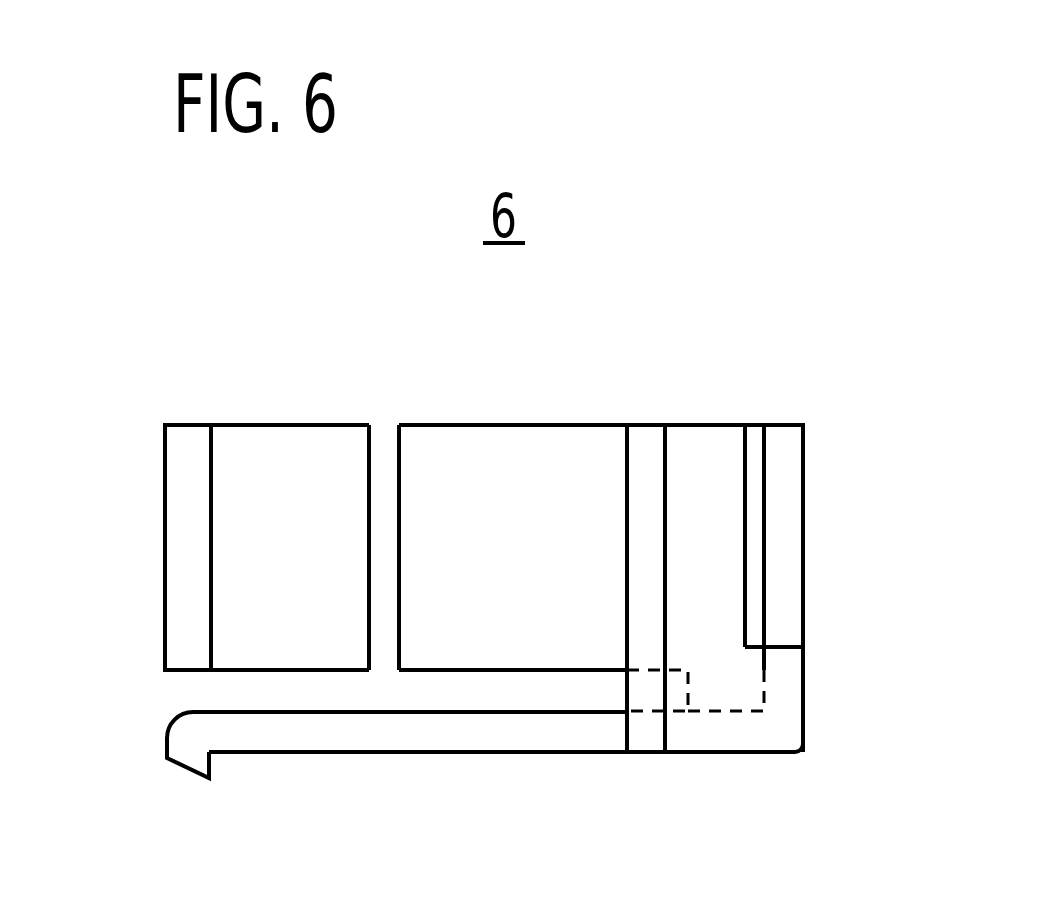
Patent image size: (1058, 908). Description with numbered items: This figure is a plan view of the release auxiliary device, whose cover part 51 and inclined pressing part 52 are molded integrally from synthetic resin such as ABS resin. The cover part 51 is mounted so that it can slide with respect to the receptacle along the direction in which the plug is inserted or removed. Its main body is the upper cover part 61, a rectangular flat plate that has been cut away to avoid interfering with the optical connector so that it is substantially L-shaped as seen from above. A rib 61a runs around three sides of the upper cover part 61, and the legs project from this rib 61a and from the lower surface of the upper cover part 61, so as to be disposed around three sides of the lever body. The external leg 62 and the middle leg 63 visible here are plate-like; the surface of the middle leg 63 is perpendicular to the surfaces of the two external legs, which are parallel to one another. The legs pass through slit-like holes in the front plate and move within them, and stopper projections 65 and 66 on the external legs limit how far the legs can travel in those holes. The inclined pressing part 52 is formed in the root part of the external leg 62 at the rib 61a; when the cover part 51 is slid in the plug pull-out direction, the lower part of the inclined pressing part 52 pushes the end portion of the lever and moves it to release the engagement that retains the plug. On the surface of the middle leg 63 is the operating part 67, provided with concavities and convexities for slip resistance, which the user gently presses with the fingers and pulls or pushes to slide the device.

The cover part 51 is at (807, 670).
The inclined pressing part 52 is at (718, 477).
The upper cover part 61 is at (777, 525).
The rib 61a is at (715, 665).
The leg 62 is at (525, 447).
The leg 63 is at (352, 733).
The stopper projection 65 is at (170, 545).
The stopper projection 66 is at (378, 440).
The operating part 67 is at (492, 747).